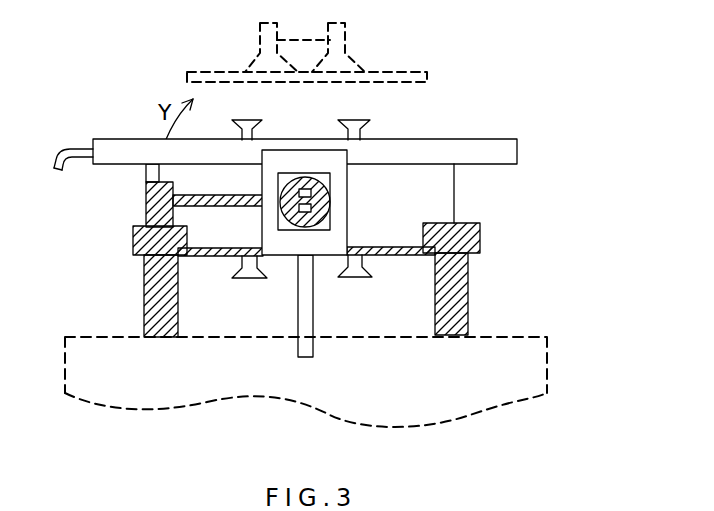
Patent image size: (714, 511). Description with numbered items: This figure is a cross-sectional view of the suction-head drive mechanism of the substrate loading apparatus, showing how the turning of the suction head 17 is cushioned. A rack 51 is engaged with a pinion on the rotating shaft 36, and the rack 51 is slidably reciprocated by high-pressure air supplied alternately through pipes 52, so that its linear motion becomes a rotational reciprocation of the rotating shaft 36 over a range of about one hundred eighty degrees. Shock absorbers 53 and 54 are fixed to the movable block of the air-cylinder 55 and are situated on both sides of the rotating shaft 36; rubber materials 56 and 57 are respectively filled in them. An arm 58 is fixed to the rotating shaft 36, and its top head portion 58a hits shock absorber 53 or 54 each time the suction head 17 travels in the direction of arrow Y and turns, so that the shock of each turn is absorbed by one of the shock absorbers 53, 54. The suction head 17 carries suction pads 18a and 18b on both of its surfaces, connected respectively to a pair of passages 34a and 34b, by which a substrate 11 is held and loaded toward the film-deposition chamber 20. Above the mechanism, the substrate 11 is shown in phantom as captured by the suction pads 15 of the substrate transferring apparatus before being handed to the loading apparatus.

The substrate 11 is at (400, 72).
The suction pads 15 is at (305, 43).
The suction head 17 is at (443, 185).
The suction pads 18a is at (340, 120).
The suction pads 18b is at (343, 264).
The film-deposition chamber 20 is at (527, 373).
The passage 34a is at (312, 193).
The passage 34b is at (311, 208).
The rotating shaft 36 is at (281, 189).
The rack 51 is at (508, 153).
The pipes 52 is at (68, 149).
The shock absorber 53 is at (155, 284).
The shock absorber 54 is at (460, 288).
The air-cylinder 55 is at (335, 162).
The rubber material 56 is at (137, 236).
The rubber material 57 is at (468, 230).
The arm 58 is at (196, 203).
The top head portion 58a is at (148, 196).